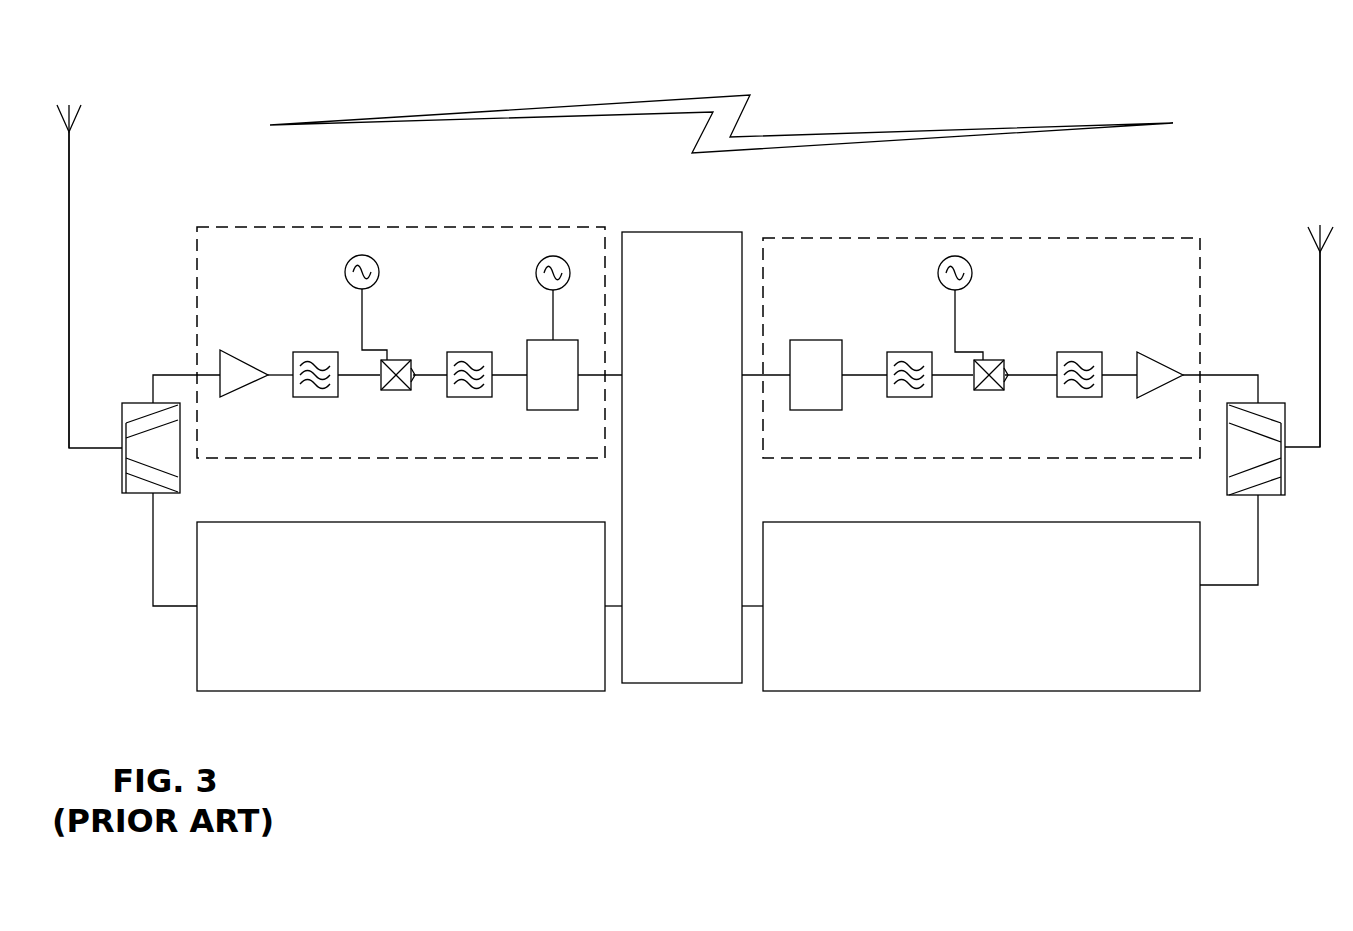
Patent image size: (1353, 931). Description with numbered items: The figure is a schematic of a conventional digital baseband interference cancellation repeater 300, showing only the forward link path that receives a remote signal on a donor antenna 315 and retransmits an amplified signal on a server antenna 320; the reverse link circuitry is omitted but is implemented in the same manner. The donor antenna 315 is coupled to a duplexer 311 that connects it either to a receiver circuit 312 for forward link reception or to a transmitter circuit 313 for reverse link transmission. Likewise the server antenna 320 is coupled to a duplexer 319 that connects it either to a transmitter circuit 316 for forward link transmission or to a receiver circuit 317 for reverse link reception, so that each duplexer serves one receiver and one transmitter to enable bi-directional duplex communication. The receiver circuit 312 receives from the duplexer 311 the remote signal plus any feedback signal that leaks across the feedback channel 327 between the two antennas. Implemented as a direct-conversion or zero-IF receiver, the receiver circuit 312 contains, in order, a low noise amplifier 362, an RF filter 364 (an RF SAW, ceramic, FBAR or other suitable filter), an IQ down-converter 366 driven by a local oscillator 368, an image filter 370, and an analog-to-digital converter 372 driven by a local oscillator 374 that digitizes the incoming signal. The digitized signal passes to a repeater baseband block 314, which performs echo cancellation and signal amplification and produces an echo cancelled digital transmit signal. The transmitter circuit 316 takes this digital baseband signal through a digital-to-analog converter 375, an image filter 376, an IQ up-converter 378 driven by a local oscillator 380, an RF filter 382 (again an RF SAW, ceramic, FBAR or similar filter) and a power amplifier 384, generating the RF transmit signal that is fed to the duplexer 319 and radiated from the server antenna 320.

The repeater 300 is at (204, 76).
The duplexer 311 is at (122, 476).
The receiver circuit 312 is at (357, 458).
The transmitter circuit 313 is at (335, 691).
The repeater baseband block 314 is at (666, 683).
The donor antenna 315 is at (69, 207).
The transmitter circuit 316 is at (873, 458).
The receiver circuit 317 is at (897, 691).
The duplexer 319 is at (1285, 485).
The server antenna 320 is at (1320, 326).
The feedback channel 327 is at (873, 132).
The low noise amplifier 362 is at (229, 356).
The RF filter 364 is at (318, 352).
The IQ down-converter 366 is at (397, 360).
The local oscillator 368 is at (379, 272).
The image filter 370 is at (470, 352).
The analog-to-digital converter 372 is at (570, 410).
The local oscillator 374 is at (536, 274).
The digital-to-analog converter 375 is at (816, 340).
The image filter 376 is at (909, 352).
The IQ up-converter 378 is at (989, 360).
The local oscillator 380 is at (972, 272).
The RF filter 382 is at (1077, 352).
The power amplifier 384 is at (1152, 360).